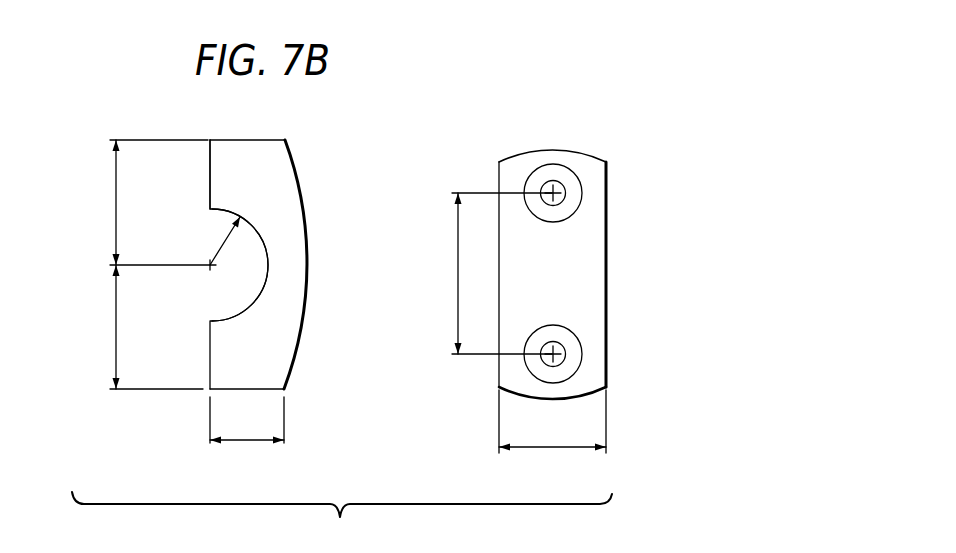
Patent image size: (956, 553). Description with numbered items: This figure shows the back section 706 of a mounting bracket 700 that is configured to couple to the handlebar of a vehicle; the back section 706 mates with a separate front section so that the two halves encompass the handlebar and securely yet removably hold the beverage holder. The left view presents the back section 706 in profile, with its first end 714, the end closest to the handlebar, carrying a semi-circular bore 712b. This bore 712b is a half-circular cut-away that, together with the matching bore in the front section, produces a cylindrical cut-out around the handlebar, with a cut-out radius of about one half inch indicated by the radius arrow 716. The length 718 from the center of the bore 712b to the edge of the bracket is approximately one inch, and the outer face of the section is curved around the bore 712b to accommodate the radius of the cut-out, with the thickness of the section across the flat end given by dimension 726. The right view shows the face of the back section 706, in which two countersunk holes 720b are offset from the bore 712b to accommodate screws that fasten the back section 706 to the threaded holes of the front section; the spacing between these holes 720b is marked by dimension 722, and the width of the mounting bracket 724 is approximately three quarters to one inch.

The mounting bracket 700 is at (143, 108).
The back section 706 is at (304, 160).
The semi-circular bore 712b is at (242, 285).
The first end of the back section 714 is at (210, 182).
The radius of cutout 716 is at (225, 240).
The length from bore center to bracket edge 718 is at (115, 189).
The countersunk holes 720b is at (560, 182).
The hole spacing dimension 722 is at (458, 272).
The width of the mounting bracket 724 is at (552, 448).
The body width dimension 726 is at (245, 442).